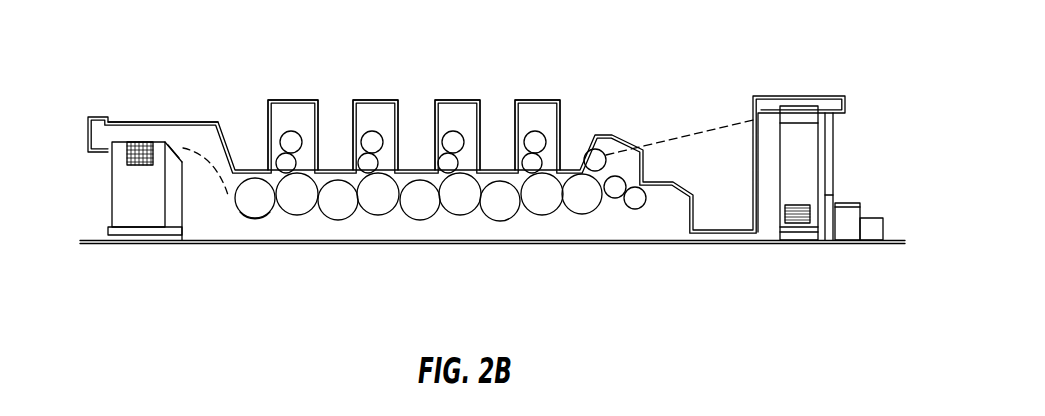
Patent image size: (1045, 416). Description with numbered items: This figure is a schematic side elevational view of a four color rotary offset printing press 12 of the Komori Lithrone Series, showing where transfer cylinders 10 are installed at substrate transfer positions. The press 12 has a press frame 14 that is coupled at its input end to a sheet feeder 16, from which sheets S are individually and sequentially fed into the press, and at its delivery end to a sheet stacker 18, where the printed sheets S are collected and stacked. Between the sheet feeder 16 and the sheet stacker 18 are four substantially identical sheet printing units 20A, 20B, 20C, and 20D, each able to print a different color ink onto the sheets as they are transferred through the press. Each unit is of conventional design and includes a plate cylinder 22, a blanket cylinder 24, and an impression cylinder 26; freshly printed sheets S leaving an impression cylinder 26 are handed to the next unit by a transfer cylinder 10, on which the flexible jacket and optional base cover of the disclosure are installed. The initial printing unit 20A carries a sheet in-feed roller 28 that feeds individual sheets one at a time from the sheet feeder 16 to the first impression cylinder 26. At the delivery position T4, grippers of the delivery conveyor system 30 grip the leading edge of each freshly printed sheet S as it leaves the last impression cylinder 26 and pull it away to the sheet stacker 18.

The transfer cylinder 10 is at (260, 232).
The rotary offset printing press 12 is at (660, 84).
The press frame 14 is at (562, 108).
The sheet feeder 16 is at (831, 135).
The sheet stacker 18 is at (127, 202).
The sheet printing unit 20A is at (521, 103).
The sheet printing unit 20B is at (450, 100).
The sheet printing unit 20C is at (375, 100).
The sheet printing unit 20D is at (298, 100).
The plate cylinder 22 is at (535, 131).
The blanket cylinder 24 is at (522, 163).
The impression cylinder 26 is at (540, 216).
The sheet in-feed roller 28 is at (606, 166).
The delivery conveyor system 30 is at (210, 108).
The delivery position T4 is at (250, 218).
The sheet S is at (797, 203).